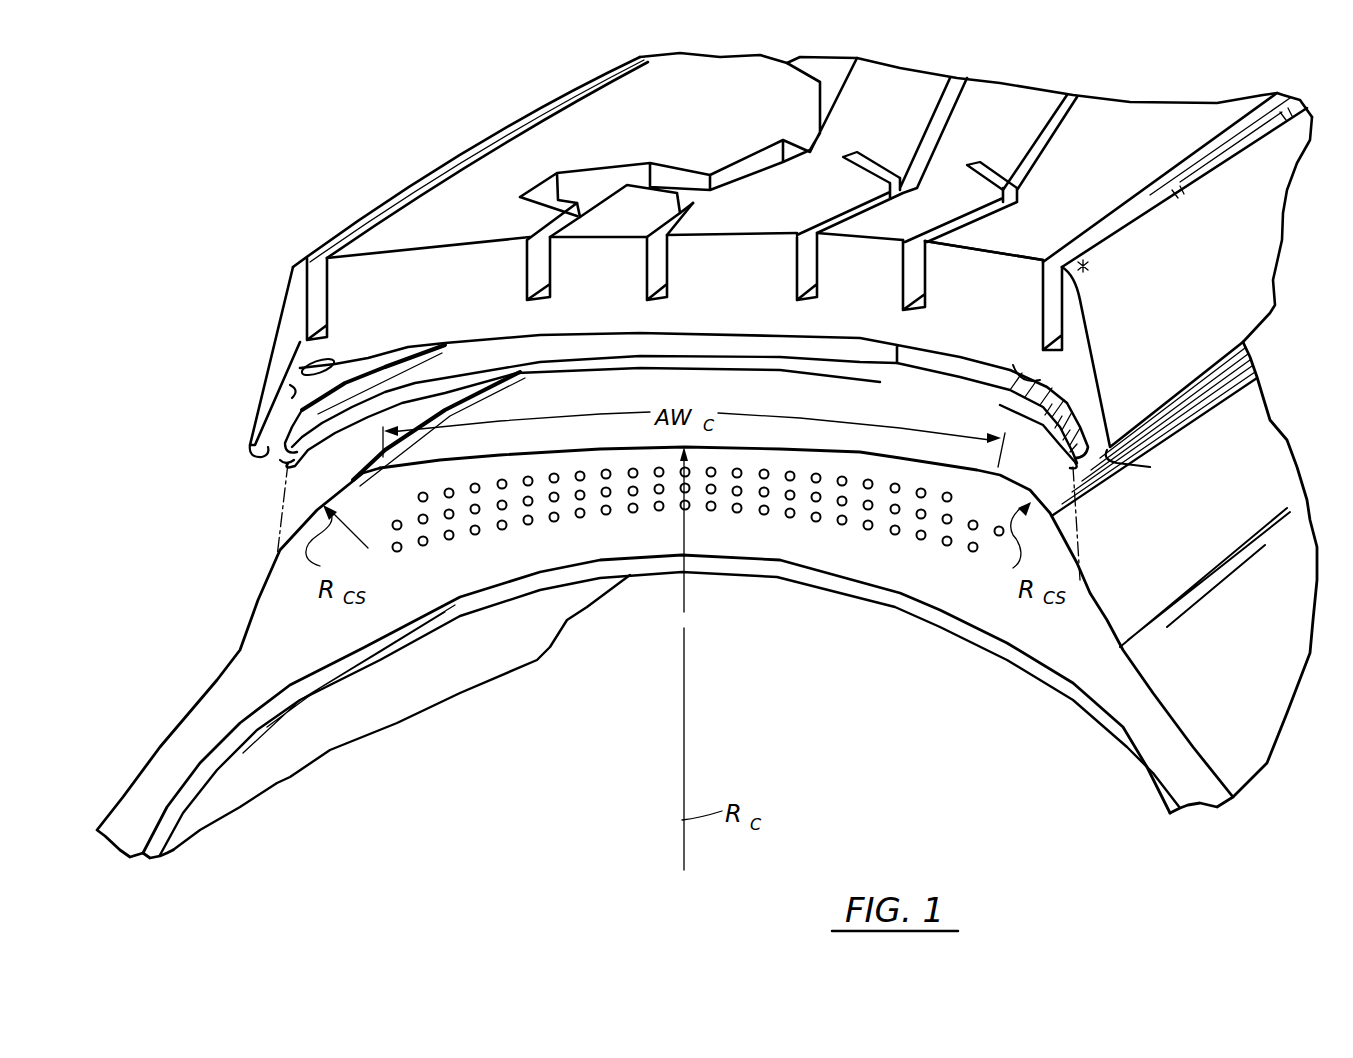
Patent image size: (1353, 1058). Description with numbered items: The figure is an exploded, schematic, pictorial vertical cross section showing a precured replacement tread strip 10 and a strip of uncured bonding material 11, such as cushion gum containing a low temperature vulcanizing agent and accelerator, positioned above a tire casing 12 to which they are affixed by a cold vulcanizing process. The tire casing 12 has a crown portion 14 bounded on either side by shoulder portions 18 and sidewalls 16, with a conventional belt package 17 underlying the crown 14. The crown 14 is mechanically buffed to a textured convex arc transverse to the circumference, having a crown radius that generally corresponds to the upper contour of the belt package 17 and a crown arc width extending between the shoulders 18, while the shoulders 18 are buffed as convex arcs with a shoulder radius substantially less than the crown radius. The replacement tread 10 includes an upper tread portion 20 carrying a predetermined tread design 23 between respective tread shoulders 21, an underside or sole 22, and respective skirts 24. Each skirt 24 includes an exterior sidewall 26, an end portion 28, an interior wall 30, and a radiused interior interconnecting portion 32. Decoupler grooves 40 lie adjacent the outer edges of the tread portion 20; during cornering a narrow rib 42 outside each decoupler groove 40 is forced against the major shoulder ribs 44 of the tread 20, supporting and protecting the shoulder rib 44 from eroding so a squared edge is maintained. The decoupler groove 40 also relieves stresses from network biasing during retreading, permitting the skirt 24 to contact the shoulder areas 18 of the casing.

The precured replacement tread strip 10 is at (260, 332).
The strip of uncured bonding material 11 is at (280, 460).
The tire casing 12 is at (228, 646).
The crown portion 14 is at (796, 426).
The sidewalls 16 is at (183, 742).
The belt package 17 is at (916, 535).
The shoulder portions 18 is at (304, 507).
The upper tread portion 20 is at (430, 262).
The tread shoulders 21 is at (548, 105).
The underside 22 is at (895, 362).
The tread design 23 is at (633, 180).
The skirts 24 is at (280, 368).
The exterior sidewall 26 is at (254, 410).
The end portion 28 is at (252, 448).
The interior wall 30 is at (293, 388).
The radiused interior interconnecting portion 32 is at (347, 358).
The decoupler grooves 40 is at (318, 282).
The narrow rib 42 is at (291, 266).
The major shoulder ribs 44 is at (1007, 250).